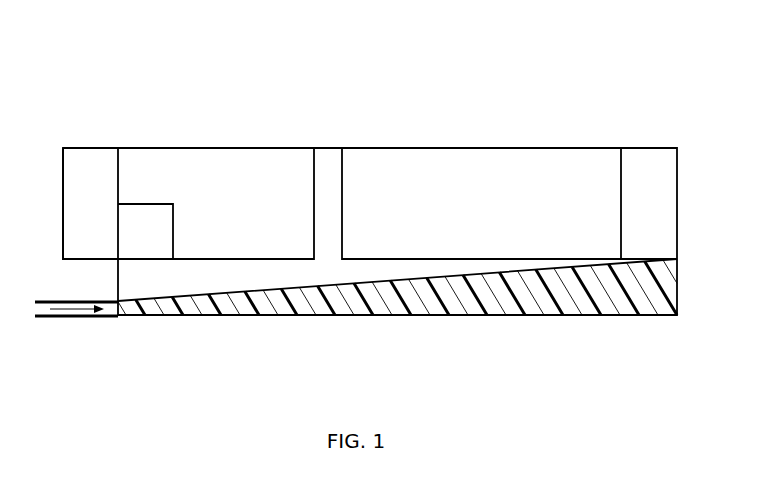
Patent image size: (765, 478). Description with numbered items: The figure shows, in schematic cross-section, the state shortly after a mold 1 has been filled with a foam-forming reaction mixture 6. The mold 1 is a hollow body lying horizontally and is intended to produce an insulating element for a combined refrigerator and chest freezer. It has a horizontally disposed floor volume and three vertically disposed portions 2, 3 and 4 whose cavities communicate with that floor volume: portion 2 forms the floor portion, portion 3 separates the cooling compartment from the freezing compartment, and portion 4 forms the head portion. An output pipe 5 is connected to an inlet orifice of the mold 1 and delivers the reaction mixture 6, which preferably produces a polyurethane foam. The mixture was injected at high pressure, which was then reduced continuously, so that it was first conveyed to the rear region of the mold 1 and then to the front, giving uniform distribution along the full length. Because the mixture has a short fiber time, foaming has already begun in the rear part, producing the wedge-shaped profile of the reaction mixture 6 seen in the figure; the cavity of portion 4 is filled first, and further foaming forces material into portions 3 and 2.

The mold 1 is at (459, 126).
The floor portion 2 is at (88, 168).
The separating portion 3 is at (328, 168).
The head portion 4 is at (648, 168).
The output pipe 5 is at (80, 320).
The foam-forming reaction mixture 6 is at (414, 317).